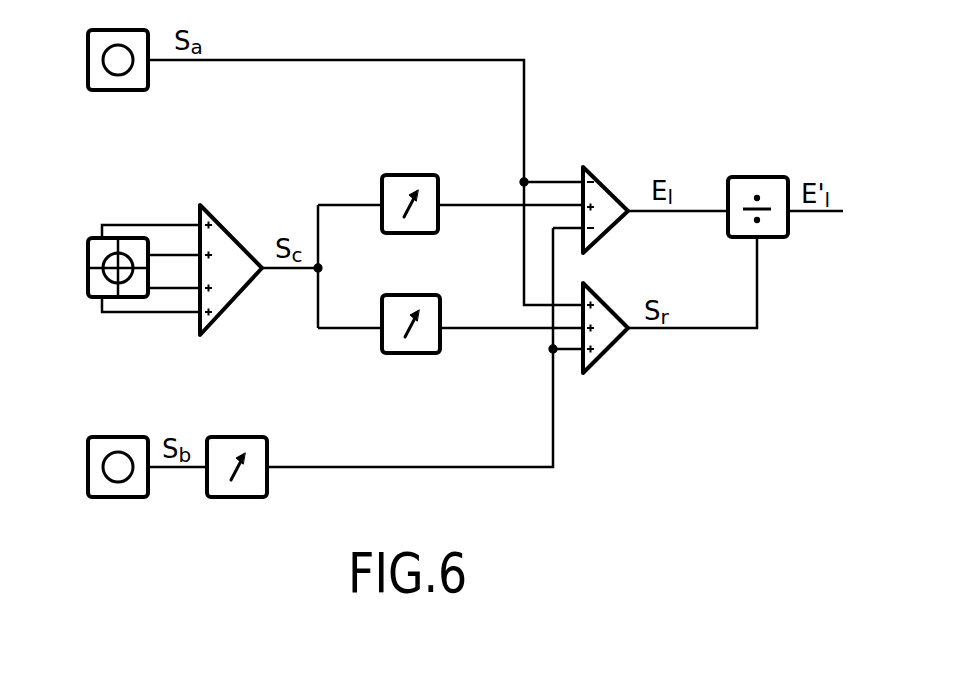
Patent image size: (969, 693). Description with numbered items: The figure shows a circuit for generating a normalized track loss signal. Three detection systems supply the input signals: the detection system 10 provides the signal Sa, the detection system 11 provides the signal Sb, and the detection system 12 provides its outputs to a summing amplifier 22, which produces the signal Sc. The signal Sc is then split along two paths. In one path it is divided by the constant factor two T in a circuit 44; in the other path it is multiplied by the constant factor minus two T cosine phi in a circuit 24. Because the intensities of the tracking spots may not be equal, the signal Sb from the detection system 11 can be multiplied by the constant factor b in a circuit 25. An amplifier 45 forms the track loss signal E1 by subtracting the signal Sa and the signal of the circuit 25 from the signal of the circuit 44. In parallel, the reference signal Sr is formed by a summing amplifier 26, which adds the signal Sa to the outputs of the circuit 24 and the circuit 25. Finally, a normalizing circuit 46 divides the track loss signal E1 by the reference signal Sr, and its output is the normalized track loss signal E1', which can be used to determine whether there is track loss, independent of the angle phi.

The detection system 10 is at (77, 72).
The detection system 11 is at (77, 486).
The detection system 12 is at (77, 280).
The summing amplifier 22 is at (240, 306).
The circuit 24 is at (414, 355).
The circuit 25 is at (268, 483).
The summing amplifier 26 is at (610, 352).
The circuit 44 is at (419, 234).
The amplifier 45 is at (605, 232).
The normalizing circuit 46 is at (775, 237).